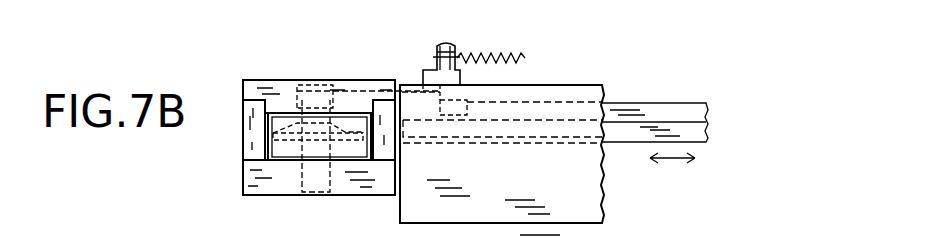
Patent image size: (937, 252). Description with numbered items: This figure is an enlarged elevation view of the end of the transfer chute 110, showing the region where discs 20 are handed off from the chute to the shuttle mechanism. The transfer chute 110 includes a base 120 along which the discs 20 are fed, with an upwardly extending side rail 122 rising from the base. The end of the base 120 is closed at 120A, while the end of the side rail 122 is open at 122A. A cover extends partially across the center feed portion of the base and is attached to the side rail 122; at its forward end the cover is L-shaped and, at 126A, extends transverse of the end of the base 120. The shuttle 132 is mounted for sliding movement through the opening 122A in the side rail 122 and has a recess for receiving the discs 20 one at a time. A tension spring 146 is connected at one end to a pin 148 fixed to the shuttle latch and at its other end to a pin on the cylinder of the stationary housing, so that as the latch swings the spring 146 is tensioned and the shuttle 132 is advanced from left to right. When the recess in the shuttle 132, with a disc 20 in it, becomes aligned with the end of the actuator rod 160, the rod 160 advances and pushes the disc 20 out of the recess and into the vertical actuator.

The disc 20 is at (348, 126).
The transfer chute 110 is at (608, 184).
The base 120 is at (360, 197).
The closed end of base 120A is at (242, 139).
The side rail 122 is at (560, 186).
The opening in side rail 122A is at (370, 142).
The transverse portion of cover 126A is at (290, 87).
The shuttle 132 is at (291, 145).
The tension spring 146 is at (525, 58).
The pin 148 is at (446, 43).
The actuator rod 160 is at (700, 134).